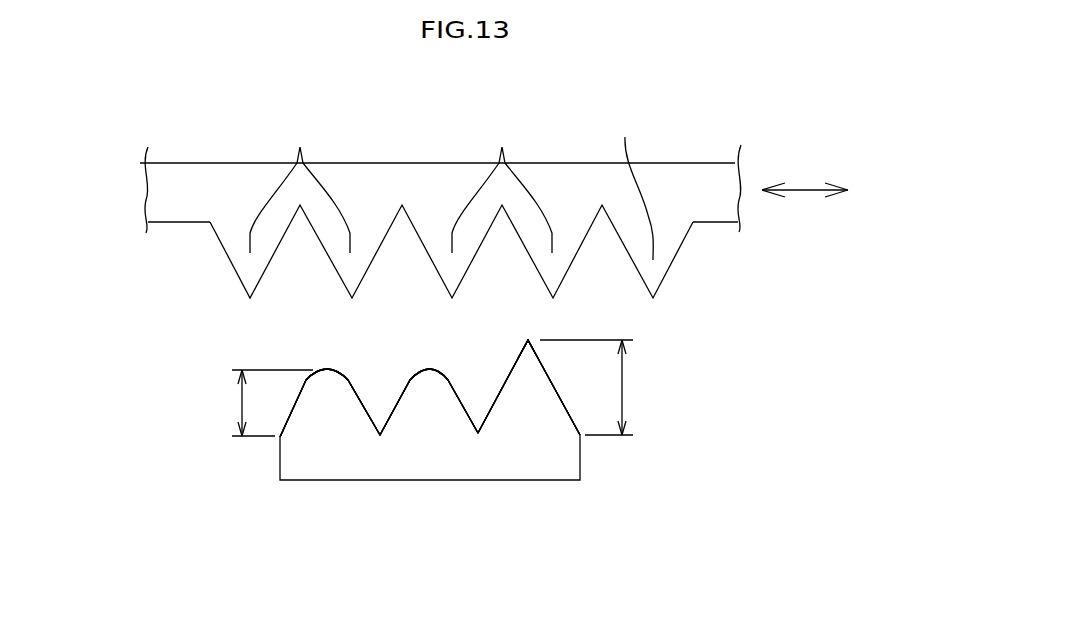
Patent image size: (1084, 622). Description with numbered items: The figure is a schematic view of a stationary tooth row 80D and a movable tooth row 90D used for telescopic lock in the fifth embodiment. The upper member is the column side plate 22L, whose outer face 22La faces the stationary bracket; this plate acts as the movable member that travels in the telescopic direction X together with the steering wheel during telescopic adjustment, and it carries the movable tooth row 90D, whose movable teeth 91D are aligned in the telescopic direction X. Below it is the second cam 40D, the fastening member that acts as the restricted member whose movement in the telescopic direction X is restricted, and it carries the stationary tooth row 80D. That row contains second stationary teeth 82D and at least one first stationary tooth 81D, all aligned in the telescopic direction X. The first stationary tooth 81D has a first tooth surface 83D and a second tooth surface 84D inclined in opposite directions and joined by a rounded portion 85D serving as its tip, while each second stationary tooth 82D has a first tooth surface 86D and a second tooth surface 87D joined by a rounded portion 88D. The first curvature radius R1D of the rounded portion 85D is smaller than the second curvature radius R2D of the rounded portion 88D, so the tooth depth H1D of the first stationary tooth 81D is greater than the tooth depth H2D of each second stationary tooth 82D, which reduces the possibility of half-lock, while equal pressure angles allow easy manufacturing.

The column side plate 22L is at (677, 160).
The outer face 22La is at (180, 224).
The movable tooth row 90D is at (695, 252).
The movable teeth 91D is at (451, 187).
The second cam 40D is at (564, 481).
The stationary tooth row 80D is at (543, 526).
The second stationary teeth 82D is at (335, 420).
The first stationary tooth 81D is at (523, 417).
The rounded portion 88D is at (325, 368).
The second tooth surface 87D is at (377, 392).
The first tooth surface 86D is at (288, 418).
The rounded portion 85D is at (530, 338).
The second tooth surface 84D is at (560, 388).
The first tooth surface 83D is at (498, 398).
The tooth depth of the first stationary tooth H1D is at (625, 385).
The tooth depth of the second stationary teeth H2D is at (240, 405).
The first curvature radius R1D is at (529, 344).
The second curvature radius R2D is at (437, 372).
The telescopic direction X is at (807, 190).